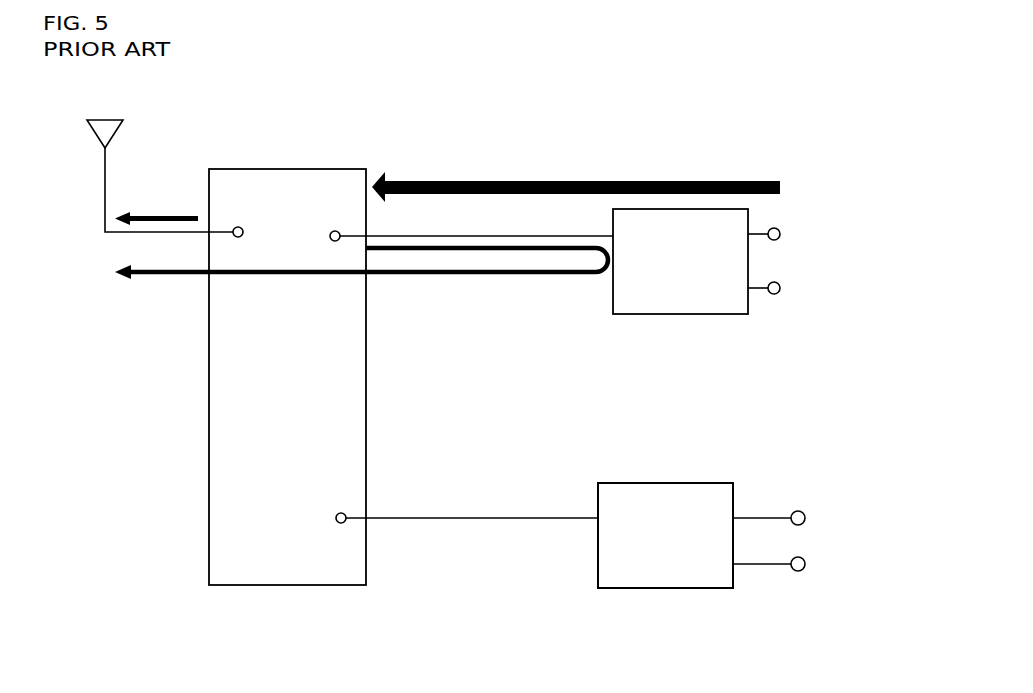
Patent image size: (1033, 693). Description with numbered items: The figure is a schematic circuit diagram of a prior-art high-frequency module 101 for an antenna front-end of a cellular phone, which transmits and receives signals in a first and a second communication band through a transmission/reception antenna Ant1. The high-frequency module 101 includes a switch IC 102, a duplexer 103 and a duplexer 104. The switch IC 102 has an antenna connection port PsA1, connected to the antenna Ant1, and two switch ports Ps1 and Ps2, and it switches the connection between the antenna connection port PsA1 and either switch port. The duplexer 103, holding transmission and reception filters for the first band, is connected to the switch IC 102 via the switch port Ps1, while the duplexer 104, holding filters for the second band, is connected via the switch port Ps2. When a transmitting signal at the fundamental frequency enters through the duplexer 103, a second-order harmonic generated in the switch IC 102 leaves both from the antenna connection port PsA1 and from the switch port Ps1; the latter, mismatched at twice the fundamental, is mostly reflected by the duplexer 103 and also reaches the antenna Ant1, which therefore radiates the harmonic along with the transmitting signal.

The high-frequency module 101 is at (618, 107).
The switch IC 102 is at (238, 175).
The duplexer 103 is at (747, 314).
The duplexer 104 is at (655, 483).
The transmission/reception antenna Ant1 is at (120, 121).
The switch port Ps1 is at (456, 224).
The switch port Ps2 is at (451, 505).
The antenna connection port PsA1 is at (242, 243).